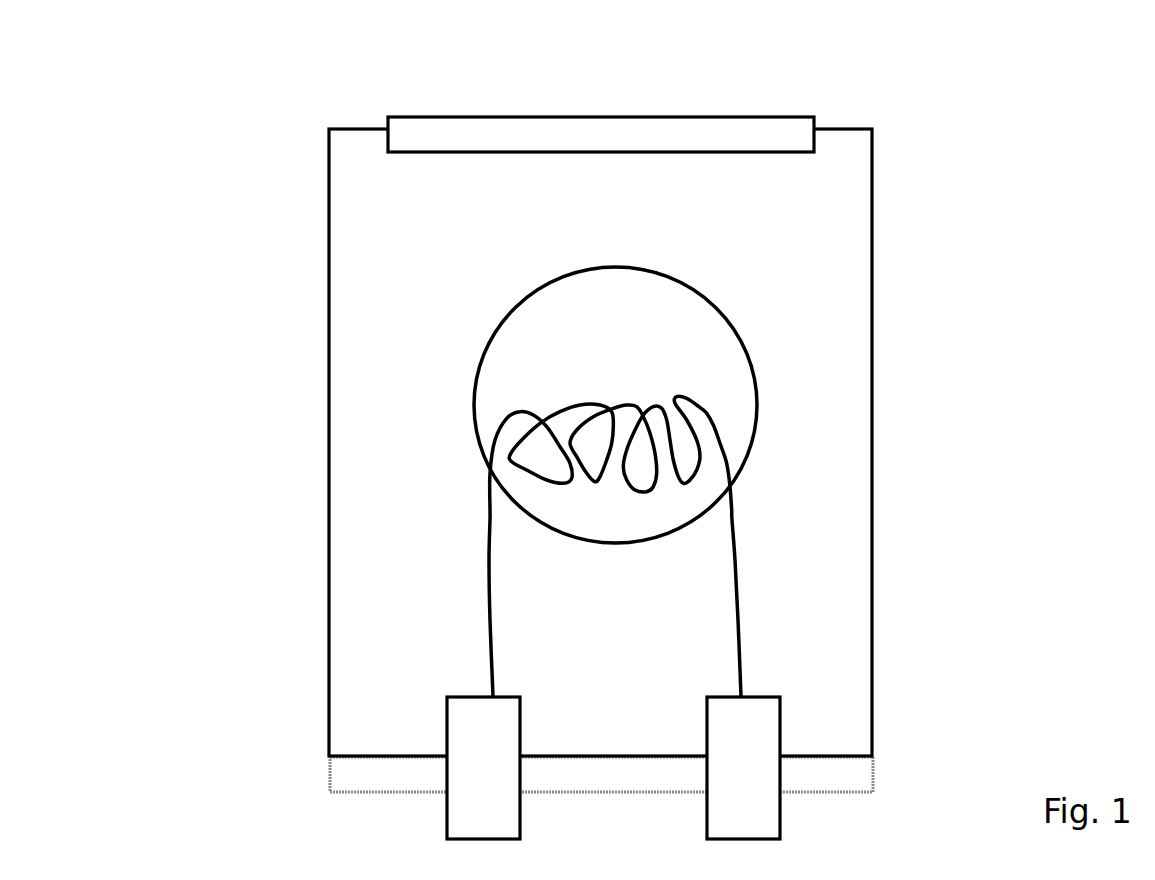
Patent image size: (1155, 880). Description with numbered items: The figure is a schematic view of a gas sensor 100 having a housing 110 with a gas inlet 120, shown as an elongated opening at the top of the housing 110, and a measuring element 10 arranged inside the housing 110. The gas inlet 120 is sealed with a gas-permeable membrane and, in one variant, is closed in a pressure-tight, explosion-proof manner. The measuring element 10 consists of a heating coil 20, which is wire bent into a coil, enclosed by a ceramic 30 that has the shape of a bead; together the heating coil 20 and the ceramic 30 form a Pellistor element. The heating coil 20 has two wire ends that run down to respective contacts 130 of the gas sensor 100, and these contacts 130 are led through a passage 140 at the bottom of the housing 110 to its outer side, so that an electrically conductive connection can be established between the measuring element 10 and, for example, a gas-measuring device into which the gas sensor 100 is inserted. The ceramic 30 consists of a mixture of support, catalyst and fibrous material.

The gas sensor 100 is at (639, 449).
The housing 110 is at (328, 200).
The gas inlet 120 is at (448, 120).
The contacts 130 is at (705, 813).
The passage 140 is at (330, 773).
The measuring element 10 is at (605, 481).
The heating coil 20 is at (488, 522).
The ceramic 30 is at (542, 378).